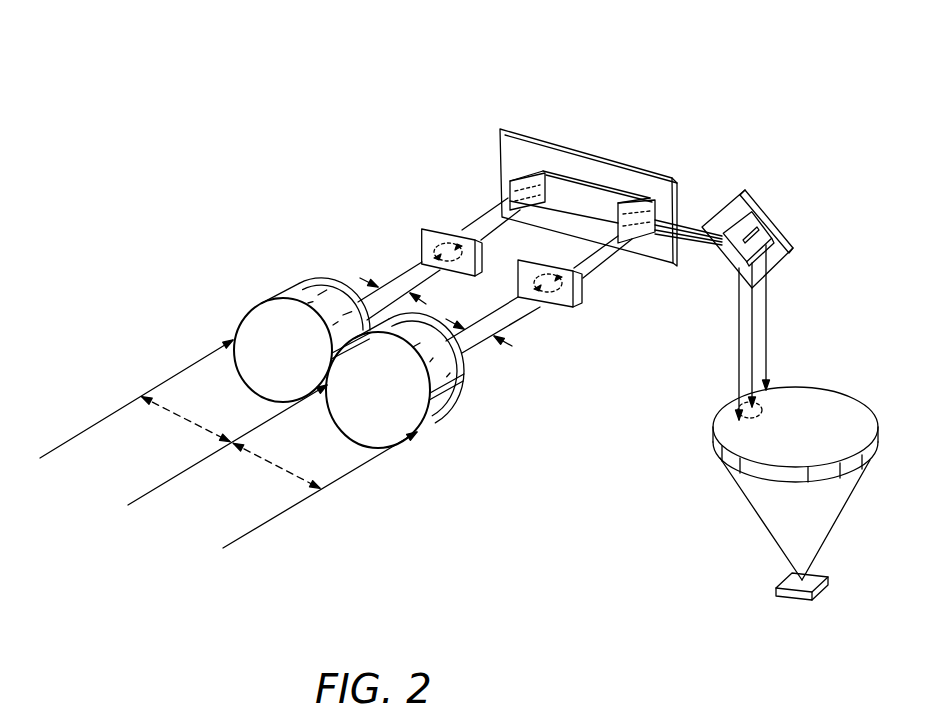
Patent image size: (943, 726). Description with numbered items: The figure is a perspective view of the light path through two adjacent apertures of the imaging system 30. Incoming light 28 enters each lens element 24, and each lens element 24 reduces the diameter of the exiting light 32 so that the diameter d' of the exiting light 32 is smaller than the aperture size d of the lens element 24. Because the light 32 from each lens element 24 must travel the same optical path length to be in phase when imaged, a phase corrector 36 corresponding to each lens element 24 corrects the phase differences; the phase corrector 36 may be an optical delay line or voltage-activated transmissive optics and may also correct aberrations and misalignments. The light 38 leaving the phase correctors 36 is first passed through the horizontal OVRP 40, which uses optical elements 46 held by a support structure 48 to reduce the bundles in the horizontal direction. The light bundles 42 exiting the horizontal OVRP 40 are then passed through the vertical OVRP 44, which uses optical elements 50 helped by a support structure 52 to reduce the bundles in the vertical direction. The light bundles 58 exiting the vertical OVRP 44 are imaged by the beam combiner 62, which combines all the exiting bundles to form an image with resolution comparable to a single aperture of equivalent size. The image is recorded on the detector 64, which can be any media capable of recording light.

The lens element 24 is at (268, 300).
The incoming light 28 is at (100, 415).
The imaging system 30 is at (308, 108).
The exiting light 32 is at (391, 273).
The phase corrector 36 is at (421, 240).
The light 38 is at (477, 218).
The horizontal OVRP 40 is at (515, 130).
The light bundles 42 is at (685, 227).
The vertical OVRP 44 is at (757, 194).
The optical elements 46 is at (511, 187).
The support structure 48 is at (585, 182).
The optical elements 50 is at (737, 223).
The support structure 52 is at (768, 218).
The light bundles 58 is at (765, 322).
The beam combiner 62 is at (715, 446).
The detector 64 is at (780, 583).